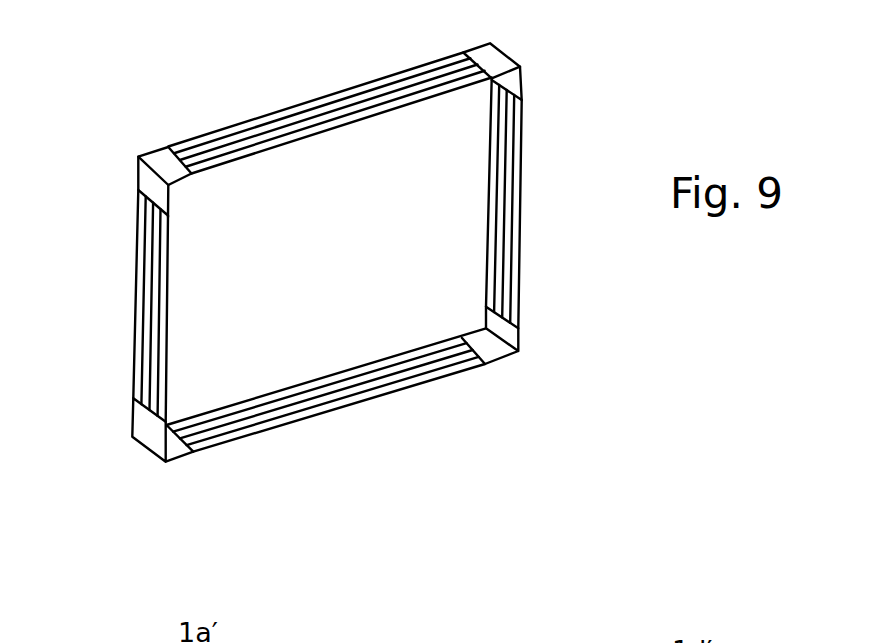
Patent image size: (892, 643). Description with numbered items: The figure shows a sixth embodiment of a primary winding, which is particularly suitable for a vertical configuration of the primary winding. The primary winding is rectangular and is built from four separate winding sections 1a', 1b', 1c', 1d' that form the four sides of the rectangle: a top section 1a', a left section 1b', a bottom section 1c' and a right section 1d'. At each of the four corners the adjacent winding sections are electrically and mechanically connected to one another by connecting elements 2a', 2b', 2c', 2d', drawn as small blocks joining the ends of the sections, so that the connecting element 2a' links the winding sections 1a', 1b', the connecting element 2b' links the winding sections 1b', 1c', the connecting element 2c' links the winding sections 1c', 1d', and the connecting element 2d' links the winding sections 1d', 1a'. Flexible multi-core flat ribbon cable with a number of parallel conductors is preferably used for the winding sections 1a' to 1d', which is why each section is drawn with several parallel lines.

The winding section 1a' is at (329, 113).
The winding section 1b' is at (120, 306).
The winding section 1c' is at (327, 389).
The winding section 1d' is at (541, 203).
The connecting element 2a' is at (158, 151).
The connecting element 2b' is at (131, 428).
The connecting element 2c' is at (530, 335).
The connecting element 2d' is at (529, 65).